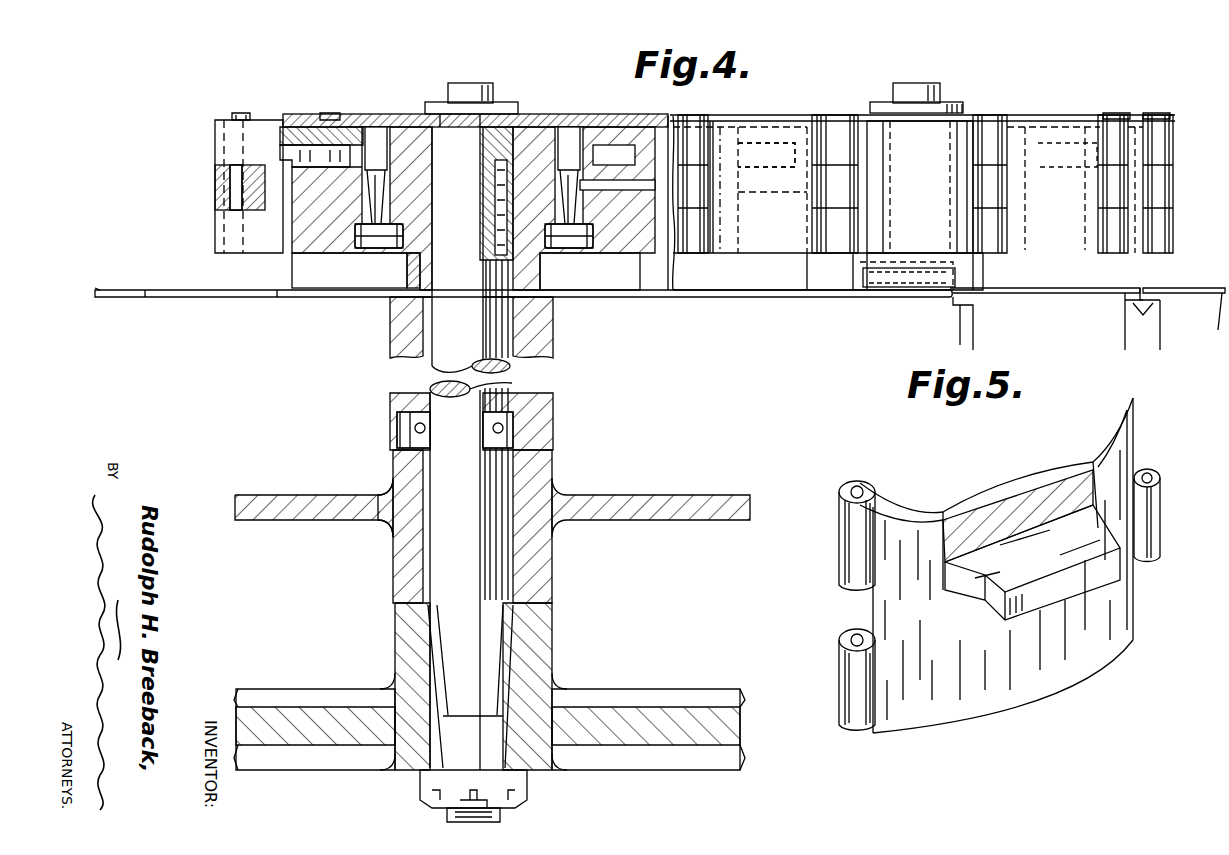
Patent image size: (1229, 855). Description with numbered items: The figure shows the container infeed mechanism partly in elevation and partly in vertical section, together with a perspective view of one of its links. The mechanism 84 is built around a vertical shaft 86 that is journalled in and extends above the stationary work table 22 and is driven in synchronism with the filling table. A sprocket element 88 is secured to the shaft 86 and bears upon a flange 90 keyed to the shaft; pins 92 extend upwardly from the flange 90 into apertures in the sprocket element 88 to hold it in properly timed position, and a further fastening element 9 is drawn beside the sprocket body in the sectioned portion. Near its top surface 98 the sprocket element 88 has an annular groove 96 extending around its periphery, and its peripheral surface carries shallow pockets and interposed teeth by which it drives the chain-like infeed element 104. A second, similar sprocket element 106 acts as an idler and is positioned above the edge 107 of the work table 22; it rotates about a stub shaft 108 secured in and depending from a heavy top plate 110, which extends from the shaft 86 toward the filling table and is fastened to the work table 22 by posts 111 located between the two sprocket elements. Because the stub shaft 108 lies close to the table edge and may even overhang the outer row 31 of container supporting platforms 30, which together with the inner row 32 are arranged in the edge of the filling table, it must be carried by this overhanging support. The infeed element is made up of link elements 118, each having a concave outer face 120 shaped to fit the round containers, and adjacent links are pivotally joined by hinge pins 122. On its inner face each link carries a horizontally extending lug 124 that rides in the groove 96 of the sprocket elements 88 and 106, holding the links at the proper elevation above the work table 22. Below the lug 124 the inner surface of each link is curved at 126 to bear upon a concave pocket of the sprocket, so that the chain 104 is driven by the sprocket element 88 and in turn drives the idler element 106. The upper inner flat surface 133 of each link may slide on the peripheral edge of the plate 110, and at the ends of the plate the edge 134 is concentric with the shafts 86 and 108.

In FIG. 4, the bolt 9 is at (573, 132).
In FIG. 4, the work table 22 is at (733, 300).
In FIG. 4, the container supporting platform 30 is at (958, 307).
In FIG. 4, the outer circular row 31 is at (1058, 290).
In FIG. 4, the inner circular row 32 is at (1165, 290).
In FIG. 4, the container infeed element 84 is at (560, 112).
In FIG. 4, the vertical shaft 86 is at (452, 135).
In FIG. 4, the sprocket element 88 is at (333, 235).
In FIG. 4, the flange 90 is at (357, 250).
In FIG. 4, the pins 92 is at (374, 128).
In FIG. 4, the annular groove 96 is at (294, 107).
In FIG. 4, the top surface 98 is at (325, 127).
In FIG. 4, the chain-like infeed element 104 is at (260, 120).
In FIG. 4, the second sprocket element 106 is at (975, 113).
In FIG. 4, the edge of work table 107 is at (955, 292).
In FIG. 4, the stub shaft 108 is at (940, 90).
In FIG. 4, the top plate 110 is at (322, 113).
In FIG. 4, the posts 111 is at (642, 268).
In FIG. 5, the link element 118 is at (917, 498).
In FIG. 5, the concave outer face 120 is at (1005, 484).
In FIG. 4, the hinge pins 122 is at (244, 118).
In FIG. 4, the lug 124 is at (293, 173).
In FIG. 5, the lug 124 is at (1070, 560).
In FIG. 5, the curved inner surface 126 is at (985, 700).
In FIG. 5, the upper inner flat surface 133 is at (1040, 490).
In FIG. 4, the edge of plate 134 is at (762, 118).